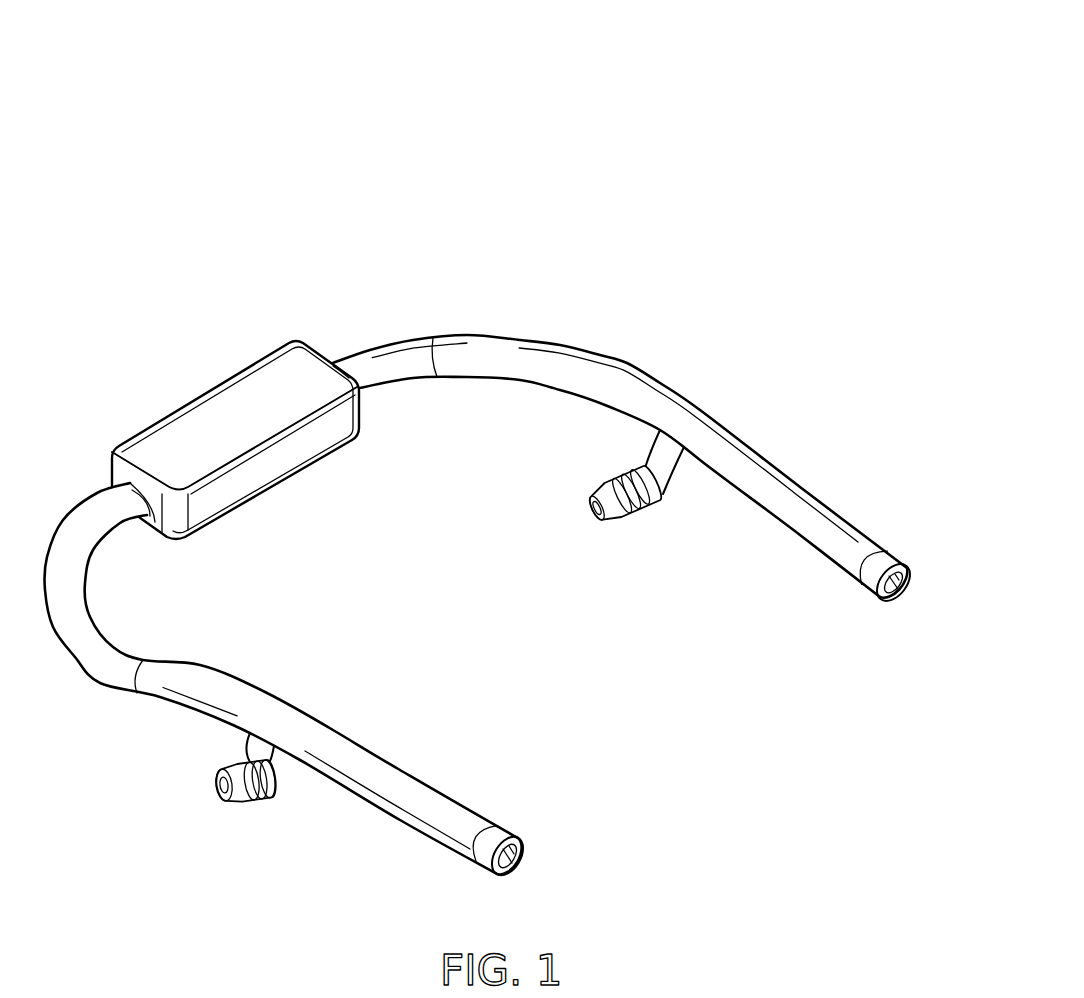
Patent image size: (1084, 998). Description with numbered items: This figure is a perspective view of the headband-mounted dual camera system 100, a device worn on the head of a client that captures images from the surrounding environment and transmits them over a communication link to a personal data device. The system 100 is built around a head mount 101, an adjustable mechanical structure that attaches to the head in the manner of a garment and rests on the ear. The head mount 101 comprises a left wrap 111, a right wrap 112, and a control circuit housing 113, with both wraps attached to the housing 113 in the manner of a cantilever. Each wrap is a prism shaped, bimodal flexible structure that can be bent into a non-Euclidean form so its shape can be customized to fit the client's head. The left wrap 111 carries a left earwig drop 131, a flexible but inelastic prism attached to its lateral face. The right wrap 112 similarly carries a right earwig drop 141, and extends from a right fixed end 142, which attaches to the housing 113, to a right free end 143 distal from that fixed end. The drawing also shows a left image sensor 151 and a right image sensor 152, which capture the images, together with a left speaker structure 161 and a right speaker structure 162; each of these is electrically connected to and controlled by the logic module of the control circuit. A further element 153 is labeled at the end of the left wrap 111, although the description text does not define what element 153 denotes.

The headband-mounted dual camera system 100 is at (506, 456).
The head mount 101 is at (762, 140).
The left wrap 111 is at (607, 383).
The right wrap 112 is at (120, 680).
The control circuit housing 113 is at (210, 397).
The left earwig drop 131 is at (668, 462).
The right earwig drop 141 is at (230, 787).
The right fixed end 142 is at (147, 520).
The right free end 143 is at (477, 823).
The left image sensor 151 is at (883, 563).
The right image sensor 152 is at (348, 365).
The end cap 153 is at (853, 547).
The left speaker structure 161 is at (612, 518).
The right speaker structure 162 is at (273, 780).